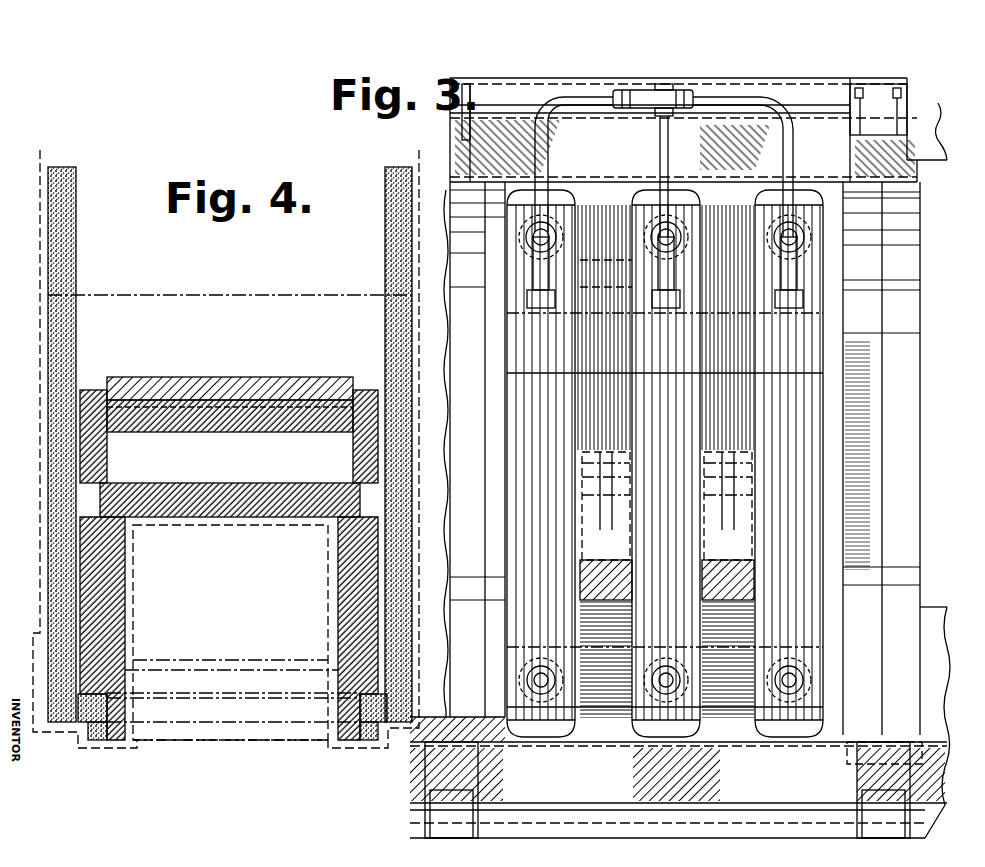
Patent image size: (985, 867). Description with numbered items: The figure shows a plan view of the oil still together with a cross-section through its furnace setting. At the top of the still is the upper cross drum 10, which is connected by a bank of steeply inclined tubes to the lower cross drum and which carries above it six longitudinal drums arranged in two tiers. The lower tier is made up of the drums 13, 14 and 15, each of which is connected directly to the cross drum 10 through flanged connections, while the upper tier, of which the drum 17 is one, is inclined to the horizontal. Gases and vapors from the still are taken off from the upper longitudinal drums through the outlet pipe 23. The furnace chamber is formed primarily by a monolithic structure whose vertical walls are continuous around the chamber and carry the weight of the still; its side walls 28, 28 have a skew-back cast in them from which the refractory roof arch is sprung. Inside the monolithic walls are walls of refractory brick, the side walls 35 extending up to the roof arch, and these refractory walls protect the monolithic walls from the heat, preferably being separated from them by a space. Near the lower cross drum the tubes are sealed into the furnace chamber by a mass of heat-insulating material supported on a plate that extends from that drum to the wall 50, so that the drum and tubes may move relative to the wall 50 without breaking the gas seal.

In FIG. 3, the upper cross drum 10 is at (925, 608).
In FIG. 3, the longitudinal drum 13 is at (510, 440).
In FIG. 3, the longitudinal drum 14 is at (690, 548).
In FIG. 3, the longitudinal drum 15 is at (812, 500).
In FIG. 3, the longitudinal drum 17 is at (860, 352).
In FIG. 3, the outlet pipe 23 is at (548, 152).
In FIG. 4, the side wall 28 is at (62, 258).
In FIG. 4, the side wall 35 is at (110, 598).
In FIG. 4, the wall 50 is at (243, 405).